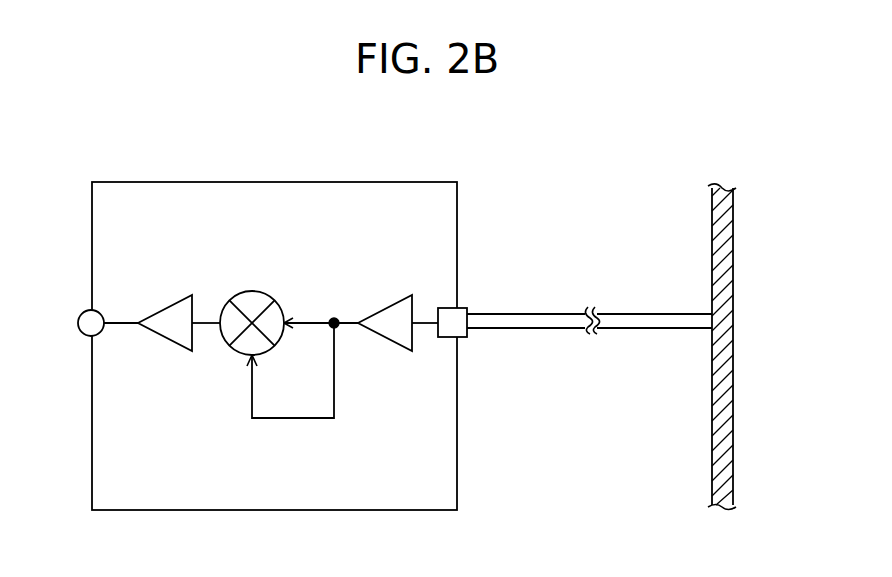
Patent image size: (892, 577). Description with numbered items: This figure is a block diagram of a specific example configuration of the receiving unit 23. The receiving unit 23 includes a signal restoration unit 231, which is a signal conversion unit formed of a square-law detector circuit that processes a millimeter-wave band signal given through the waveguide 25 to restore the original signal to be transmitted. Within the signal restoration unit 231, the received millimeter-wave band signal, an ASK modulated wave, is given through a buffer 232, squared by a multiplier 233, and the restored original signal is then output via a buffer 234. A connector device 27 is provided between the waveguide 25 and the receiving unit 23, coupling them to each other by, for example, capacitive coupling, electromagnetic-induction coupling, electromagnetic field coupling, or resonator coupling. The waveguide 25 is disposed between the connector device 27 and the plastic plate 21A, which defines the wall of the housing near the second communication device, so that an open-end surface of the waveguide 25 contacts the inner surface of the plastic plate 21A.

The receiving unit 23 is at (275, 182).
The signal restoration unit 231 is at (170, 426).
The buffer 232 is at (378, 332).
The multiplier 233 is at (250, 292).
The buffer 234 is at (160, 332).
The connector device 27 is at (463, 312).
The waveguide 25 is at (624, 328).
The plastic plate 21A is at (733, 230).